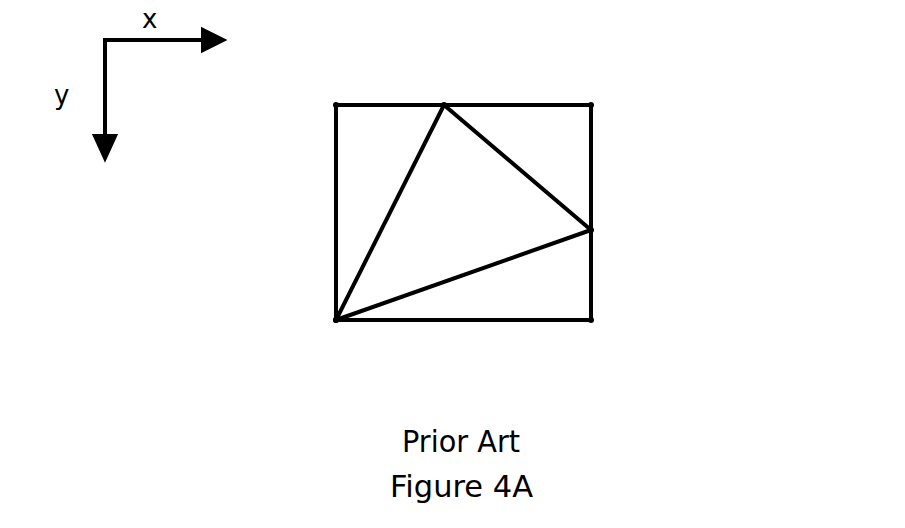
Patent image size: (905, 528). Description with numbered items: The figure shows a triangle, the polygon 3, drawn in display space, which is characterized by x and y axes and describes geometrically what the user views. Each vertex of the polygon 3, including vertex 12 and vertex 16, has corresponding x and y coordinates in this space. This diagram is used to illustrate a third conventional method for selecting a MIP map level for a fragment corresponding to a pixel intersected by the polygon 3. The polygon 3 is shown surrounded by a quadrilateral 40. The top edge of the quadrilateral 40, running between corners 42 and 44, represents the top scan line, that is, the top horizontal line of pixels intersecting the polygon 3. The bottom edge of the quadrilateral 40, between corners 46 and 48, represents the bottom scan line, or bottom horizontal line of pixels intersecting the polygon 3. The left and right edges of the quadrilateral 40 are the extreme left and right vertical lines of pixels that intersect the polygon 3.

The polygon 3 is at (397, 192).
The vertex 12 is at (444, 105).
The vertex 16 is at (591, 230).
The quadrilateral 40 is at (695, 103).
The corner 42 is at (336, 105).
The corner 44 is at (591, 105).
The corner 46 is at (336, 320).
The corner 48 is at (591, 320).